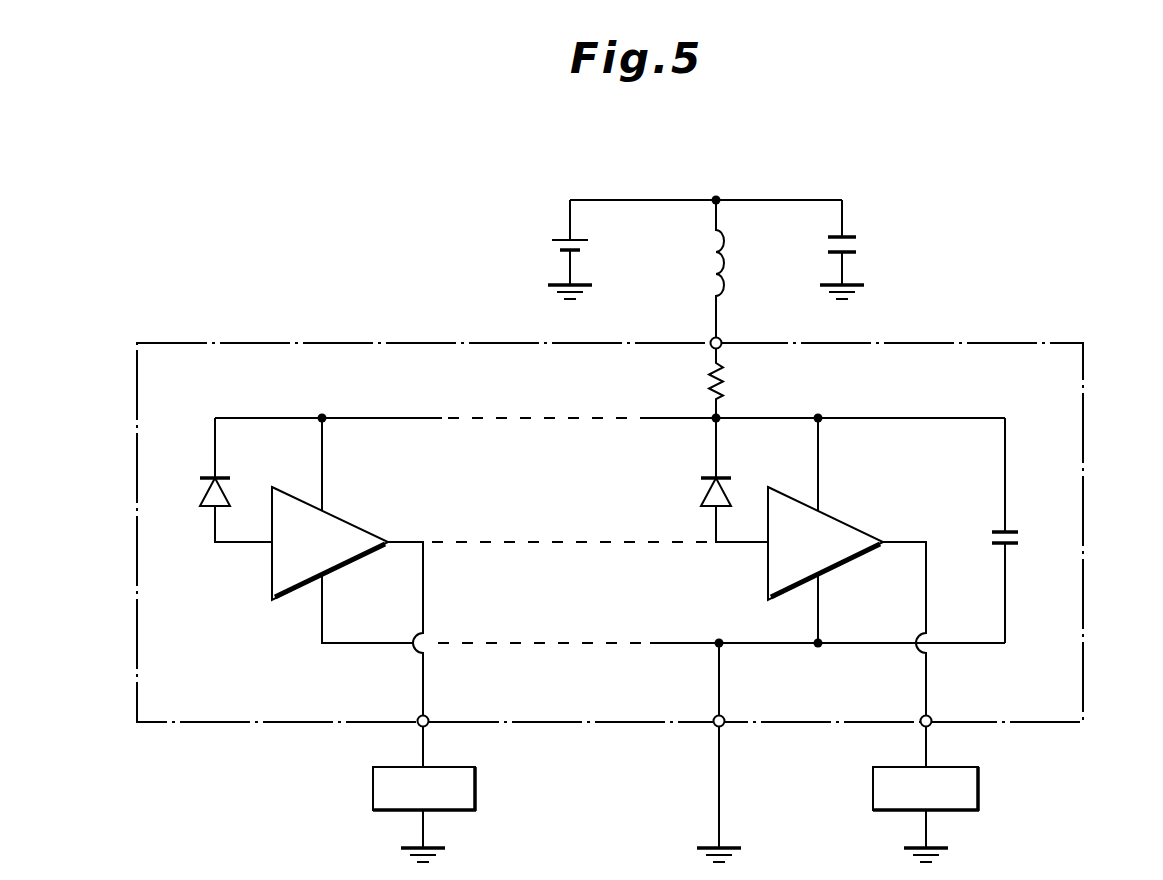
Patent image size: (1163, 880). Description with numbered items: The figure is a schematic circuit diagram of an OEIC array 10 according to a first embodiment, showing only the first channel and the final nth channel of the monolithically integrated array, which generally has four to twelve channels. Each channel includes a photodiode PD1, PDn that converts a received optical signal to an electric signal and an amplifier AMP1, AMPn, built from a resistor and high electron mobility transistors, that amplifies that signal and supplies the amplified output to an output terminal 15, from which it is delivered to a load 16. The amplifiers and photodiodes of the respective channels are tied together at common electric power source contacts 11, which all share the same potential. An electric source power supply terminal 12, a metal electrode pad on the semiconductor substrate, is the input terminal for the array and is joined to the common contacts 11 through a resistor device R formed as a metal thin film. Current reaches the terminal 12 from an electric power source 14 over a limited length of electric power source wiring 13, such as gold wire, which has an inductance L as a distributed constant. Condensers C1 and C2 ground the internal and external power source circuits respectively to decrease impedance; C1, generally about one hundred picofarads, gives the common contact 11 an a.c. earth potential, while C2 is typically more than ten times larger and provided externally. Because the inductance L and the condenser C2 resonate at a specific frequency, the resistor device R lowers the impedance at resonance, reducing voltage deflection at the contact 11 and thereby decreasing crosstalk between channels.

The OEIC array 10 is at (1083, 562).
The common electric power source contact 11 is at (324, 416).
The electric source power supply terminal 12 is at (721, 339).
The electric power source wiring 13 is at (779, 200).
The electric power source 14 is at (551, 234).
The output terminal 15 is at (430, 726).
The load 16 is at (478, 790).
The inductance L is at (731, 269).
The resistor device R is at (704, 378).
The condenser C1 is at (1019, 530).
The condenser C2 is at (855, 249).
The photodiode PD1 is at (217, 480).
The photodiode PDn is at (709, 480).
The amplifier AMP1 is at (348, 522).
The amplifier AMPn is at (855, 523).